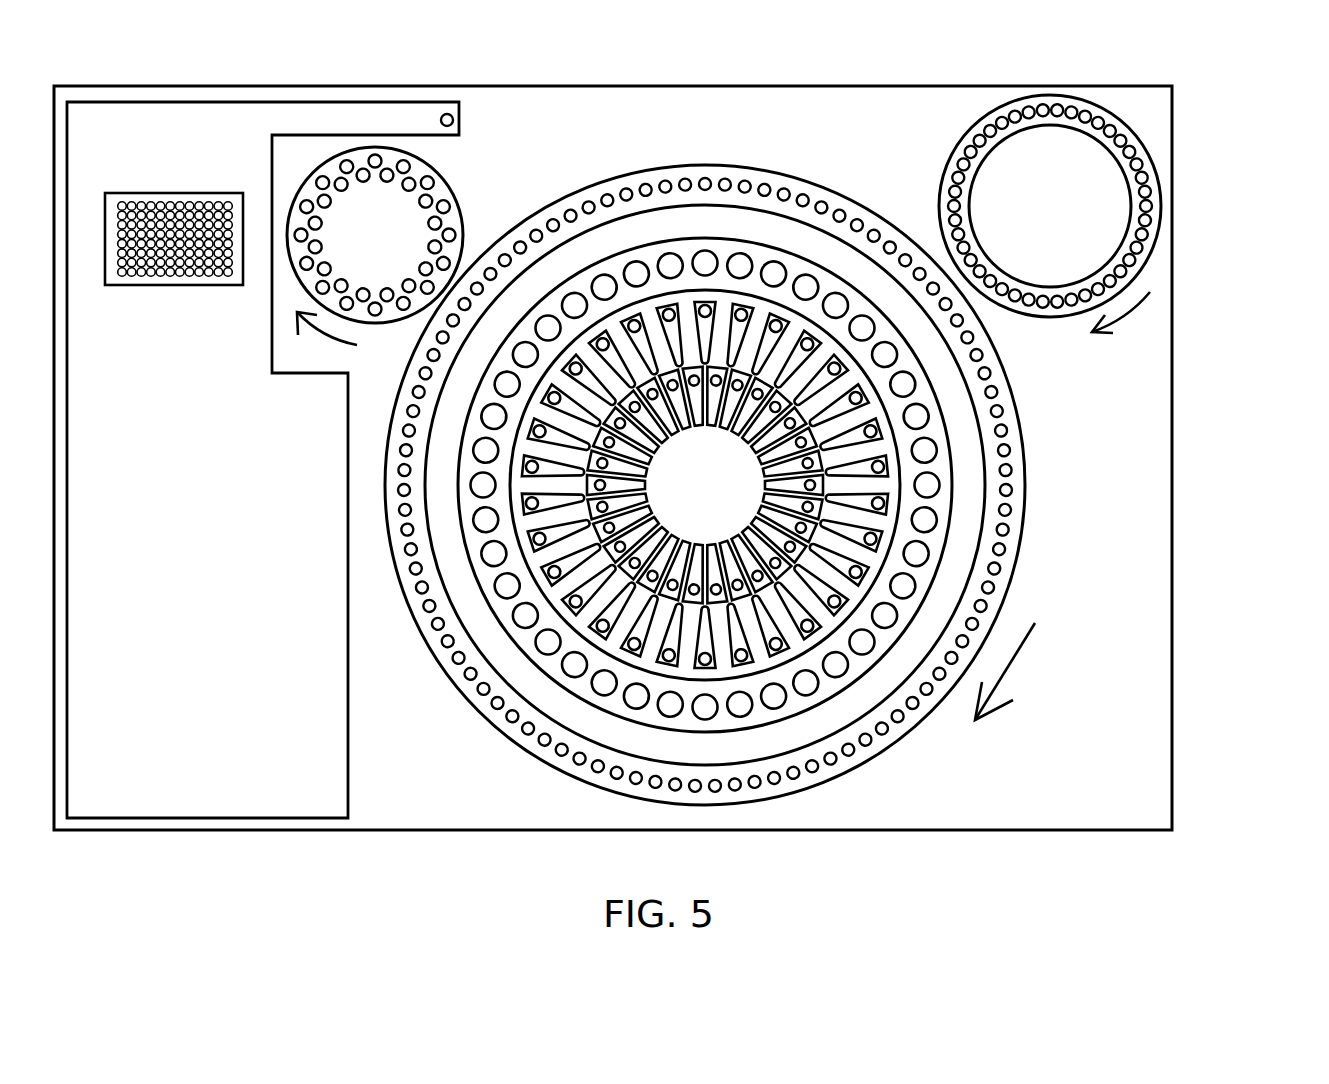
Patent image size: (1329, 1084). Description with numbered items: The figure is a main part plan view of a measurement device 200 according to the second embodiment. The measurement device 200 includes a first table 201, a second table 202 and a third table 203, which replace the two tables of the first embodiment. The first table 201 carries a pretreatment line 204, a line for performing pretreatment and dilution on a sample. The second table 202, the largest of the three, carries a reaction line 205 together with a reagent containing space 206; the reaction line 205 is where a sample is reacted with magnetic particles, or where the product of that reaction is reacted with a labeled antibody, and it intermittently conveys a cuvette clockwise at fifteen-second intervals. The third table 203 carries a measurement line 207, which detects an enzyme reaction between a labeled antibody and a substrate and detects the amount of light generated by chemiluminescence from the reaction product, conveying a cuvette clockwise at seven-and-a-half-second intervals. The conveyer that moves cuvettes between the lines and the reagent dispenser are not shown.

The measurement device 200 is at (1178, 378).
The first table 201 is at (435, 167).
The second table 202 is at (825, 185).
The third table 203 is at (1077, 320).
The pretreatment line 204 is at (455, 193).
The reaction line 205 is at (1013, 505).
The reagent containing space 206 is at (858, 557).
The measurement line 207 is at (1040, 310).